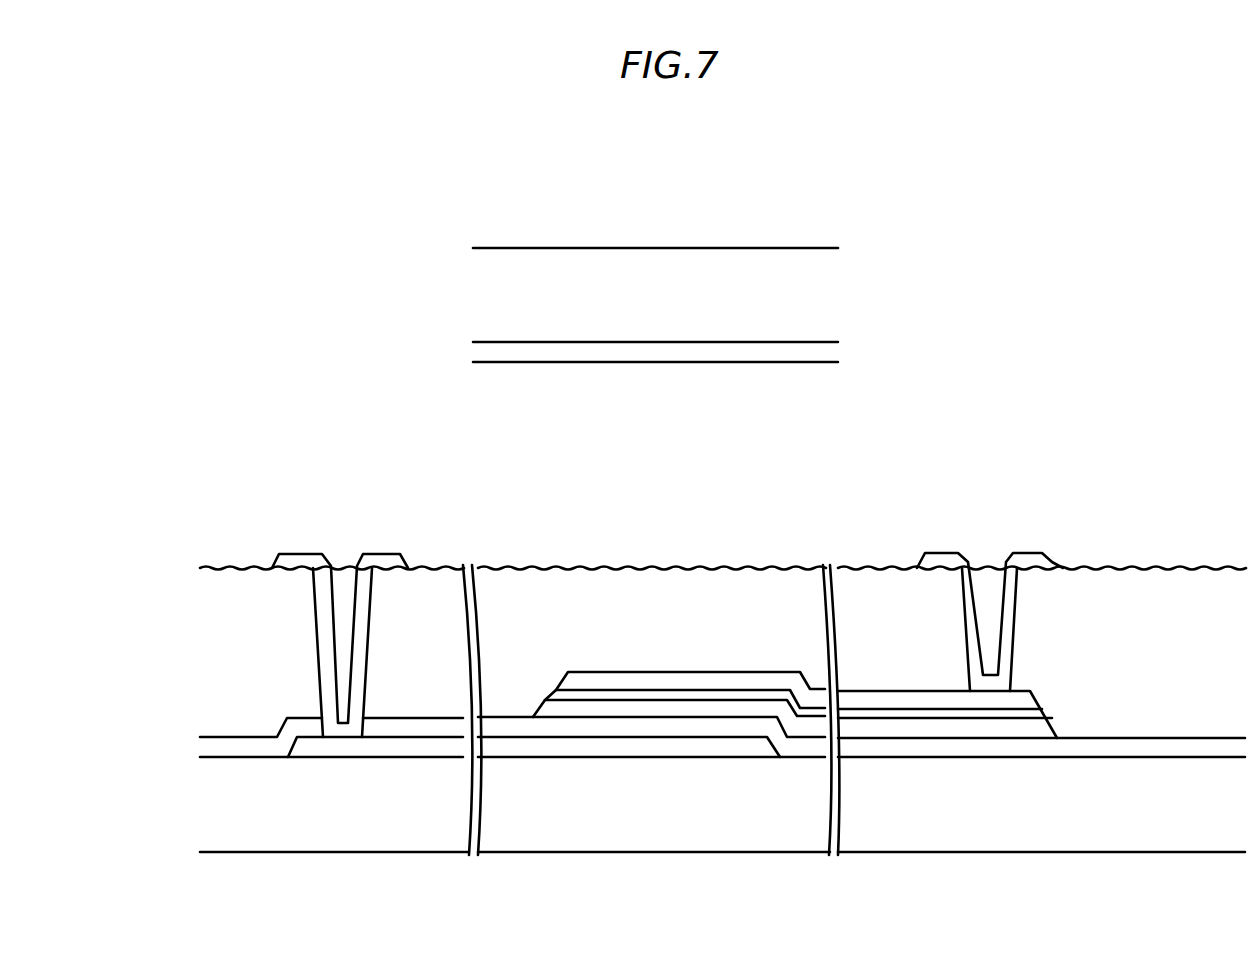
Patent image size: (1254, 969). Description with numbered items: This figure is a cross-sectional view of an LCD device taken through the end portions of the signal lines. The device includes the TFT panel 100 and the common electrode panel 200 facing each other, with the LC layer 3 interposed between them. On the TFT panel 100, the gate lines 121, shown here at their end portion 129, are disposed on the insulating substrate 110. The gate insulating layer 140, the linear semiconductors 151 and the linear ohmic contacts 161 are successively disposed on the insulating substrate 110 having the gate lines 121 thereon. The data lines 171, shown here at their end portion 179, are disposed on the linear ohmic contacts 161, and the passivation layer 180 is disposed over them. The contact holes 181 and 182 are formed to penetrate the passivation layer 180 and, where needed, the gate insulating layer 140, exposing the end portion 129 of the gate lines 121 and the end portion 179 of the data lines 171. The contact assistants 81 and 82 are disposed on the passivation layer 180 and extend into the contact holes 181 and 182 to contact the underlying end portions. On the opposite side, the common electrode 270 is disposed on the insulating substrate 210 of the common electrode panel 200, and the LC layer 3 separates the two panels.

The LC layer 3 is at (846, 451).
The TFT panel 100 is at (653, 708).
The insulating substrate 110 is at (306, 822).
The gate lines 121 is at (690, 747).
The end portion 129 is at (368, 747).
The gate insulating layer 140 is at (427, 725).
The linear semiconductors 151 is at (640, 705).
The linear ohmic contacts 161 is at (610, 693).
The data lines 171 is at (582, 682).
The end portion 179 is at (915, 700).
The passivation layer 180 is at (253, 710).
The contact hole 181 is at (318, 620).
The contact hole 182 is at (968, 615).
The contact assistant 81 is at (300, 560).
The contact assistant 82 is at (947, 558).
The common electrode panel 200 is at (594, 273).
The insulating substrate 210 is at (723, 268).
The common electrode 270 is at (643, 353).